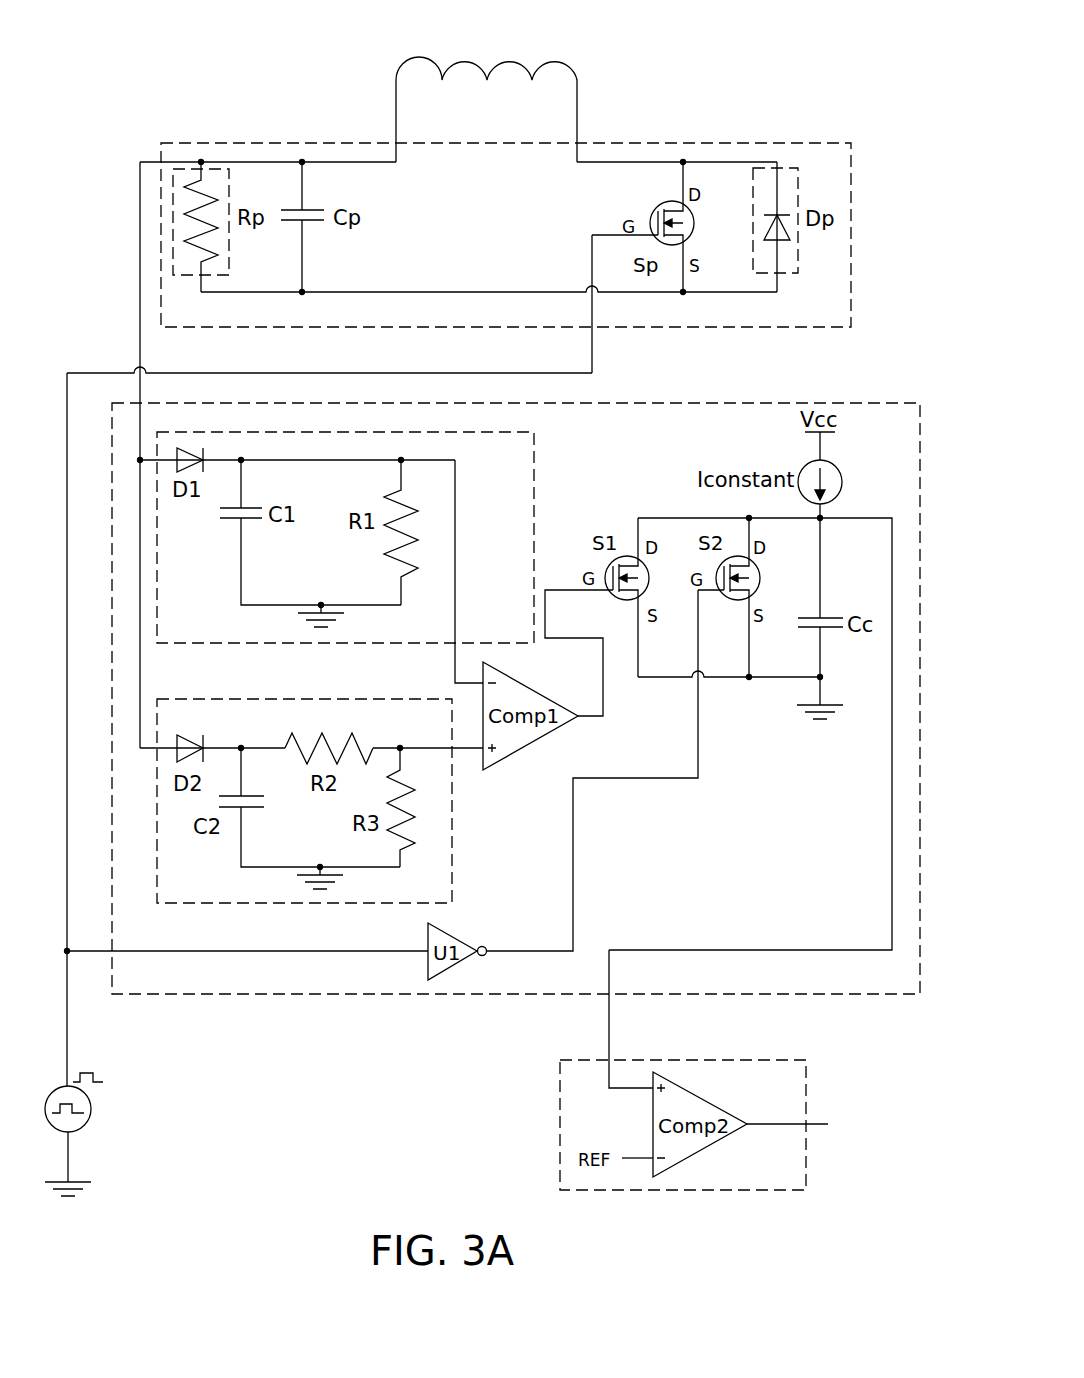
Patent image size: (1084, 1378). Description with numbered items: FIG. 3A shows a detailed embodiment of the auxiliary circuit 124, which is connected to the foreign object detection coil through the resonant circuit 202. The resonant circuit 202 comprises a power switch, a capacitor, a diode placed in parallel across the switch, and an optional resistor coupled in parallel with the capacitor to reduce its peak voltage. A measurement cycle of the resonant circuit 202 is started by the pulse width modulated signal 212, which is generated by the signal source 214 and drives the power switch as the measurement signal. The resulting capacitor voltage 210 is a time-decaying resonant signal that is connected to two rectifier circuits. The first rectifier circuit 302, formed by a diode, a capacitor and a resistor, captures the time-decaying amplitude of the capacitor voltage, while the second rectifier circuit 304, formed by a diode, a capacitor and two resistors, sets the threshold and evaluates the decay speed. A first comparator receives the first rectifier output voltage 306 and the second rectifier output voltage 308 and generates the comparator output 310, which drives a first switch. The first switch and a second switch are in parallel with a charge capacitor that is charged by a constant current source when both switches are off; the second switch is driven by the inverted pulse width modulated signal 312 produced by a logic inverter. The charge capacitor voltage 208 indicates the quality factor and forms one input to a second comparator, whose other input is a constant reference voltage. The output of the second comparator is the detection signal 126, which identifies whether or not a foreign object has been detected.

The auxiliary circuit 124 is at (565, 57).
The resonant circuit 202 is at (773, 143).
The capacitor voltage Vc 210 is at (139, 302).
The first rectifier circuit 302 is at (534, 460).
The output voltage Vc1 306 is at (456, 530).
The second rectifier circuit 304 is at (338, 699).
The output voltage Vc2 308 is at (465, 752).
The comparator output Vp1 310 is at (583, 718).
The inverted PWM signal 312 is at (498, 955).
The PWM signal 212 is at (68, 1030).
The PWM signal source 214 is at (75, 1133).
The voltage Vcp of the charge capacitor 208 is at (608, 1027).
The detection signal Vout 126 is at (819, 1121).